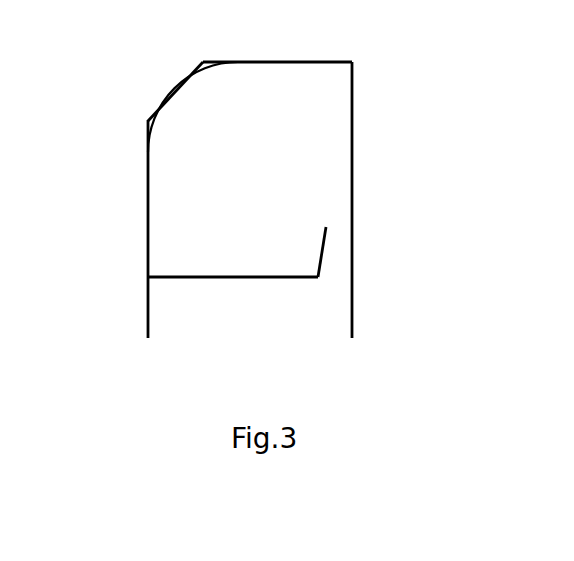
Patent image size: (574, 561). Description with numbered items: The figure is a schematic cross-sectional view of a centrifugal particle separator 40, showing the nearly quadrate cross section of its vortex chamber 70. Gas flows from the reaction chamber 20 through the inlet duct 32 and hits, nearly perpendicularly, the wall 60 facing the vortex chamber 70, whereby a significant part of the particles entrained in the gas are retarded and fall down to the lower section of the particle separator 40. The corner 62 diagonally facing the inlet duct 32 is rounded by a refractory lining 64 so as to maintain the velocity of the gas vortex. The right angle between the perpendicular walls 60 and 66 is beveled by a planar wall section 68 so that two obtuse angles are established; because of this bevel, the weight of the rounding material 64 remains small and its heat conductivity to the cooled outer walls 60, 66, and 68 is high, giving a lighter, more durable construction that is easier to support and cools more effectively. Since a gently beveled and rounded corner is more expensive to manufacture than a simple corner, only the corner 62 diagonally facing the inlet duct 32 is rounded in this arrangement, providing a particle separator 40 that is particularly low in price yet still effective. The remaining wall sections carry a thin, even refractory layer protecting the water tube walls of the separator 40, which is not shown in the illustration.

The particle separator 40 is at (269, 169).
The wall 60 is at (303, 60).
The corner 62 is at (177, 70).
The refractory lining 64 is at (212, 68).
The wall 66 is at (147, 236).
The planar wall section 68 is at (163, 107).
The vortex chamber 70 is at (343, 117).
The inlet duct 32 is at (342, 245).
The reaction chamber 20 is at (268, 330).